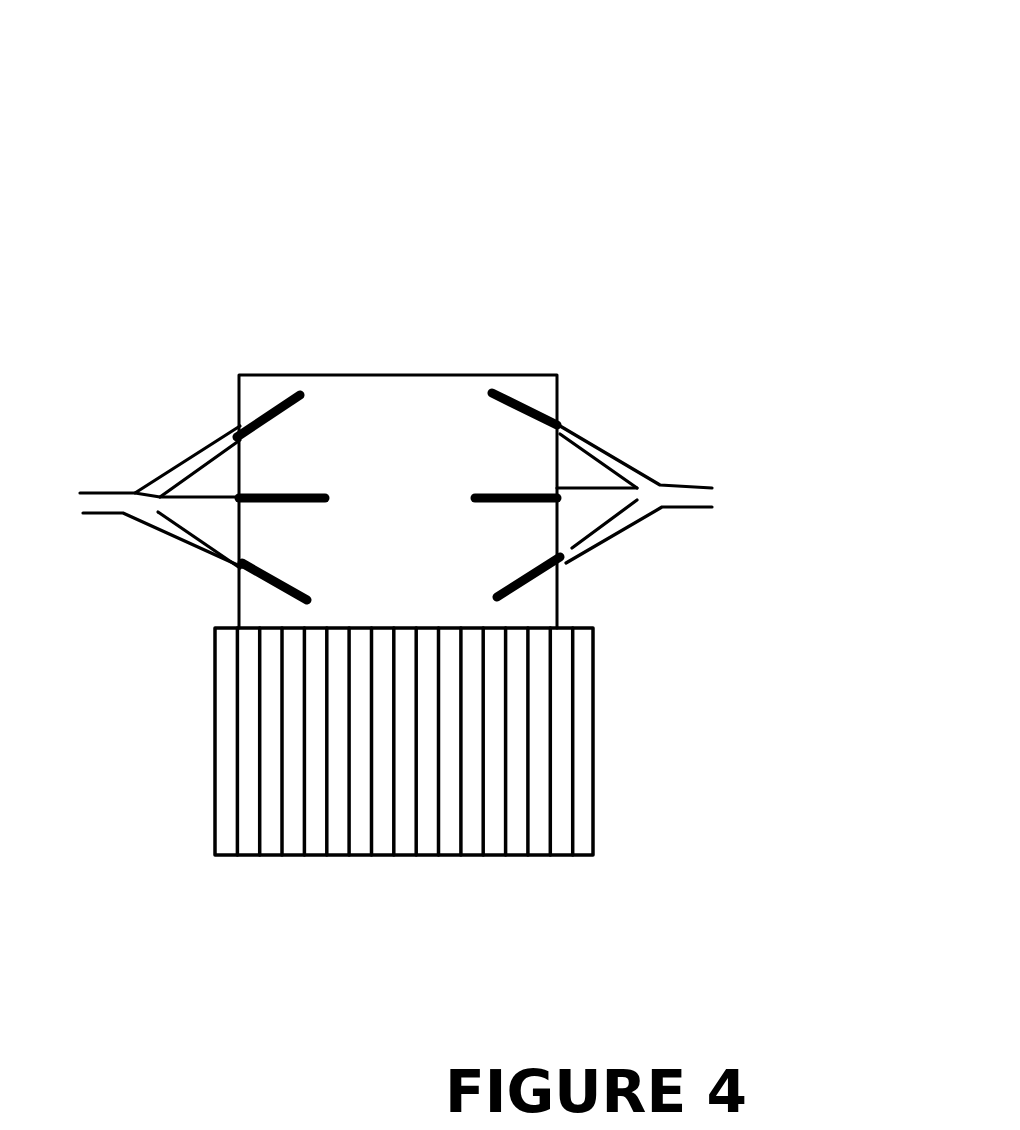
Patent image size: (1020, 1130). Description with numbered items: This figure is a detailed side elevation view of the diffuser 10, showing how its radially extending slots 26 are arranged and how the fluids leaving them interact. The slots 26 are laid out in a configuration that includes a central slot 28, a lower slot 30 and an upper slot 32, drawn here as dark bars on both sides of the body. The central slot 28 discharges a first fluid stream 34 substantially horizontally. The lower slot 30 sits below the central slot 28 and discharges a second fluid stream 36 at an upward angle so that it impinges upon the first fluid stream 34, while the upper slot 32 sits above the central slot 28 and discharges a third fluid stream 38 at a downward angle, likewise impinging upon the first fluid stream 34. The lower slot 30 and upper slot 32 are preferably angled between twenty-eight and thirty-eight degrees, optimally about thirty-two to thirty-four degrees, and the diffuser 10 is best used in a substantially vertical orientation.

The diffuser 10 is at (653, 227).
The slots 26 is at (296, 404).
The central slot 28 is at (325, 497).
The lower slot 30 is at (237, 595).
The upper slot 32 is at (277, 412).
The first fluid stream 34 is at (173, 493).
The second fluid stream 36 is at (180, 537).
The third fluid stream 38 is at (202, 452).